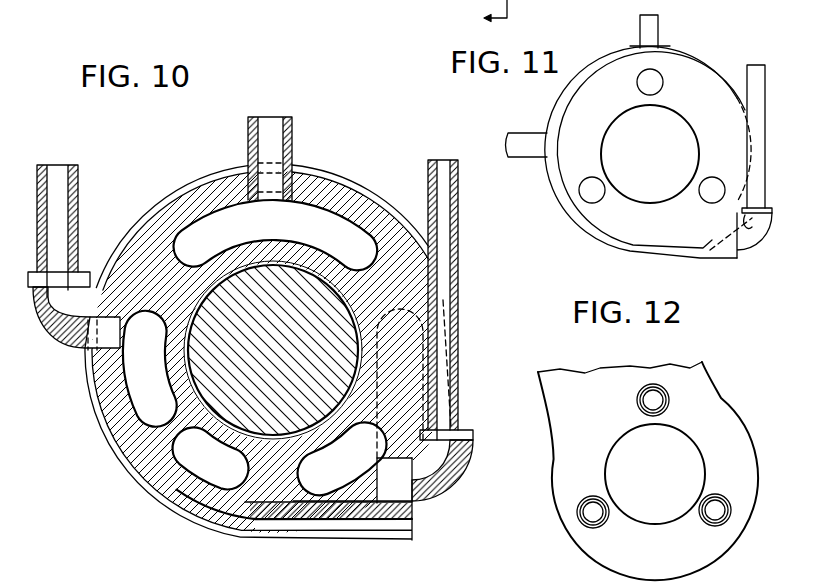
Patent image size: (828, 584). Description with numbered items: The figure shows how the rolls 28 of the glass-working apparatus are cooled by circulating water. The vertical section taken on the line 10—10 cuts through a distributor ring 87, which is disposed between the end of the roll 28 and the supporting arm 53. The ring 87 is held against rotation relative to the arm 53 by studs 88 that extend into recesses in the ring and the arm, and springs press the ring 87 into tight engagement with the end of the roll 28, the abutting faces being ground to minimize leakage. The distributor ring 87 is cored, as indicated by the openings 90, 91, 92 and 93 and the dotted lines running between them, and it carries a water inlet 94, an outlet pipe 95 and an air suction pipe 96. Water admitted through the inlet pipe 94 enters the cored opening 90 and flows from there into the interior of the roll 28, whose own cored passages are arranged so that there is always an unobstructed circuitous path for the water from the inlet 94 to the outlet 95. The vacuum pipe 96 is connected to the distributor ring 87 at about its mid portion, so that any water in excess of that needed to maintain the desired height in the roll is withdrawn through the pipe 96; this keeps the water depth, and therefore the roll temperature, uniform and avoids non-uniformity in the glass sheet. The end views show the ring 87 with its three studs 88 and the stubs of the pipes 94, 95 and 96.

In FIG. 11, the section line 10 is at (509, 14).
In FIG. 10, the roll 28 is at (337, 178).
In FIG. 12, the supporting arm 53 is at (570, 410).
In FIG. 10, the distributor ring 87 is at (370, 226).
In FIG. 11, the distributor ring 87 is at (690, 68).
In FIG. 12, the studs 88 is at (713, 500).
In FIG. 10, the cored opening 90 is at (276, 235).
In FIG. 10, the cored opening 91 is at (150, 369).
In FIG. 10, the cored opening 92 is at (211, 458).
In FIG. 10, the cored opening 93 is at (342, 458).
In FIG. 10, the water inlet 94 is at (258, 146).
In FIG. 11, the water inlet 94 is at (640, 27).
In FIG. 10, the outlet pipe 95 is at (445, 465).
In FIG. 11, the outlet pipe 95 is at (763, 190).
In FIG. 10, the air suction pipe 96 is at (62, 188).
In FIG. 11, the air suction pipe 96 is at (517, 140).